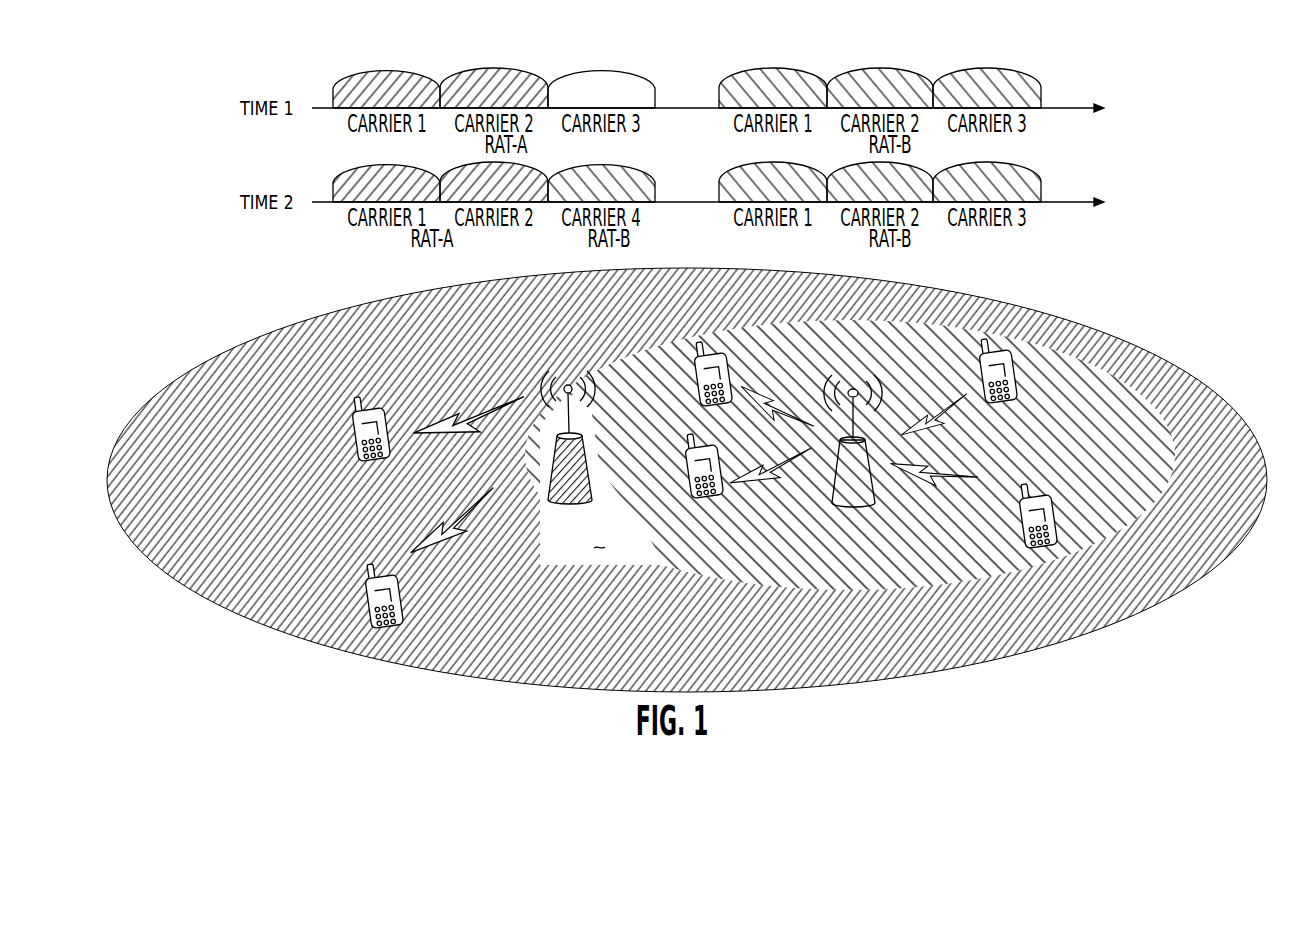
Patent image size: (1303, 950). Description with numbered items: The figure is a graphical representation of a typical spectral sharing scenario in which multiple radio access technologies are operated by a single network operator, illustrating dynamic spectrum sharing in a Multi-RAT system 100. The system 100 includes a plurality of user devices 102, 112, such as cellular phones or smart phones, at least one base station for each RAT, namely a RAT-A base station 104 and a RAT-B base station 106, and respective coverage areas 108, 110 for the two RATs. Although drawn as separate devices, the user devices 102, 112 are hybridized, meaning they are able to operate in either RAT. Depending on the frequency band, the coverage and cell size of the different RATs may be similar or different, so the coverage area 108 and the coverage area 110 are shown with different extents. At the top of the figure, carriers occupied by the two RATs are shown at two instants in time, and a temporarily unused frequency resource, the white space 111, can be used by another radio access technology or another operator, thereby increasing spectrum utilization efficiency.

The Multi-RAT system 100 is at (520, 695).
The user devices 102 is at (353, 450).
The base station for RAT-A 104 is at (597, 487).
The base station for RAT-B 106 is at (893, 540).
The coverage area of first RAT 108 is at (1098, 595).
The coverage area of second RAT 110 is at (1083, 387).
The white space 111 is at (590, 90).
The user devices 112 is at (1047, 560).